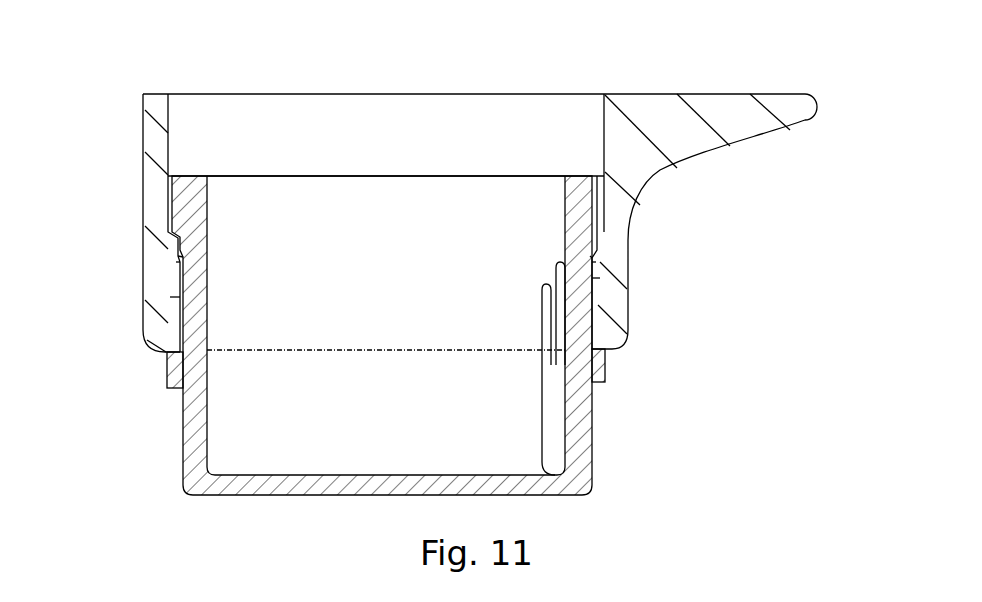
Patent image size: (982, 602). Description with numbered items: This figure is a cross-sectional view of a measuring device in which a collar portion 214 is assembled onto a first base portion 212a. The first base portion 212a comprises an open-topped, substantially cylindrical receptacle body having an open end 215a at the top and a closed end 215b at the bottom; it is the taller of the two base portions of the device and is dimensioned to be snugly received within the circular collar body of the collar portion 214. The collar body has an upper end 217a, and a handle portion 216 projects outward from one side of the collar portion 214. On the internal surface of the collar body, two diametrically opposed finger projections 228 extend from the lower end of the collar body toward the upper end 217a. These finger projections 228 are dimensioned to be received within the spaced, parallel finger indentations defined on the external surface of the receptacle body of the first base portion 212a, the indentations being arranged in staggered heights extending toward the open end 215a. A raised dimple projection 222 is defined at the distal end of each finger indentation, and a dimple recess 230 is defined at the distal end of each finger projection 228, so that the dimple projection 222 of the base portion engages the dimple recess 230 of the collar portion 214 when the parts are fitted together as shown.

The first base portion 212a is at (578, 427).
The collar portion 214 is at (150, 157).
The open end 215a is at (522, 146).
The closed end 215b is at (224, 517).
The handle portion 216 is at (728, 100).
The upper end 217a is at (214, 71).
The raised dimple projection 222 is at (178, 256).
The finger projection 228 is at (172, 297).
The dimple recess 230 is at (176, 262).